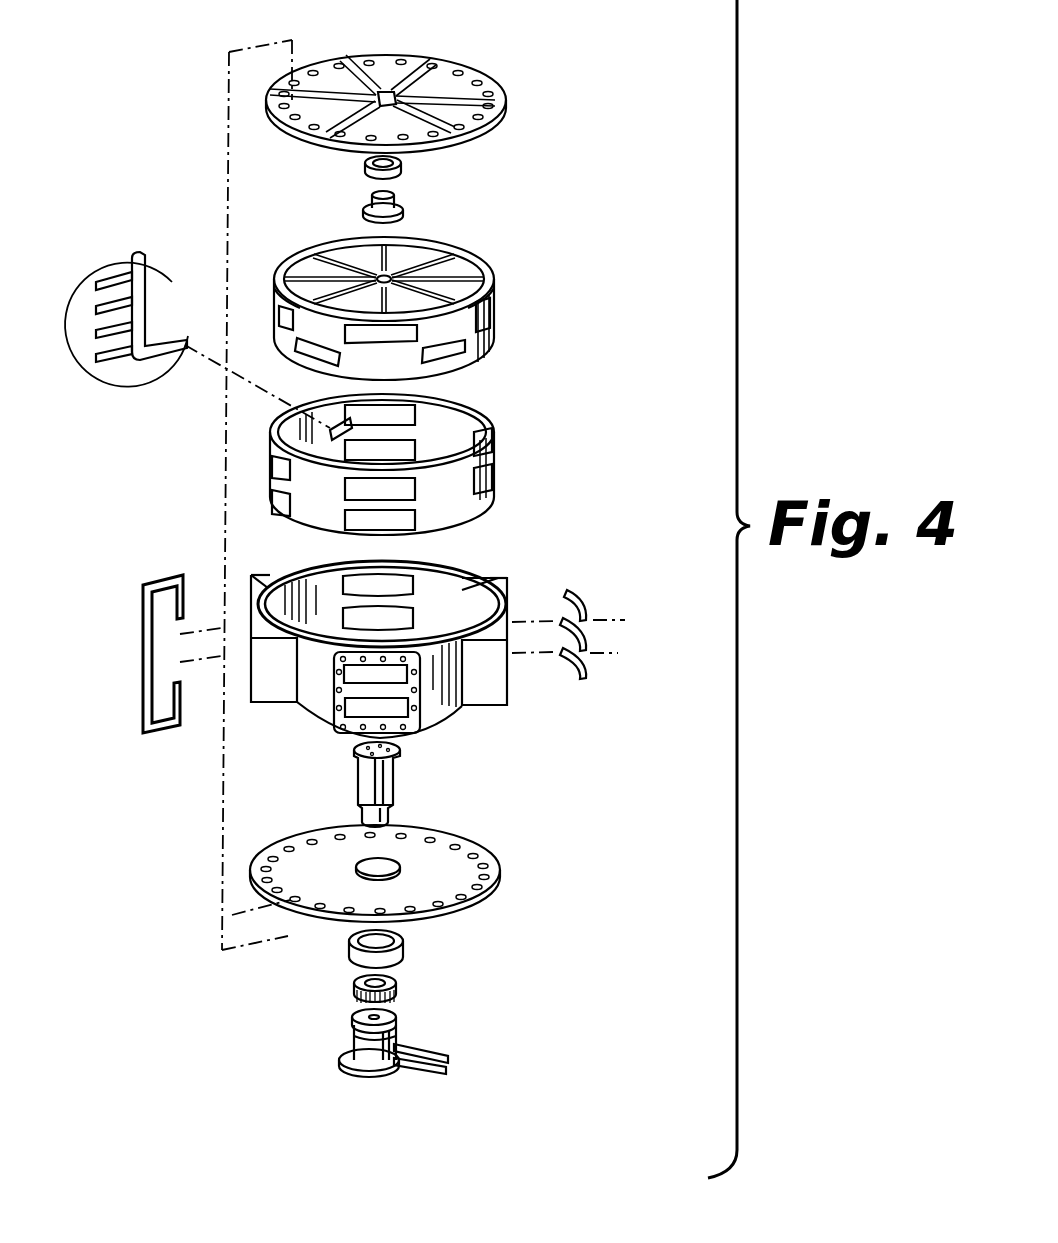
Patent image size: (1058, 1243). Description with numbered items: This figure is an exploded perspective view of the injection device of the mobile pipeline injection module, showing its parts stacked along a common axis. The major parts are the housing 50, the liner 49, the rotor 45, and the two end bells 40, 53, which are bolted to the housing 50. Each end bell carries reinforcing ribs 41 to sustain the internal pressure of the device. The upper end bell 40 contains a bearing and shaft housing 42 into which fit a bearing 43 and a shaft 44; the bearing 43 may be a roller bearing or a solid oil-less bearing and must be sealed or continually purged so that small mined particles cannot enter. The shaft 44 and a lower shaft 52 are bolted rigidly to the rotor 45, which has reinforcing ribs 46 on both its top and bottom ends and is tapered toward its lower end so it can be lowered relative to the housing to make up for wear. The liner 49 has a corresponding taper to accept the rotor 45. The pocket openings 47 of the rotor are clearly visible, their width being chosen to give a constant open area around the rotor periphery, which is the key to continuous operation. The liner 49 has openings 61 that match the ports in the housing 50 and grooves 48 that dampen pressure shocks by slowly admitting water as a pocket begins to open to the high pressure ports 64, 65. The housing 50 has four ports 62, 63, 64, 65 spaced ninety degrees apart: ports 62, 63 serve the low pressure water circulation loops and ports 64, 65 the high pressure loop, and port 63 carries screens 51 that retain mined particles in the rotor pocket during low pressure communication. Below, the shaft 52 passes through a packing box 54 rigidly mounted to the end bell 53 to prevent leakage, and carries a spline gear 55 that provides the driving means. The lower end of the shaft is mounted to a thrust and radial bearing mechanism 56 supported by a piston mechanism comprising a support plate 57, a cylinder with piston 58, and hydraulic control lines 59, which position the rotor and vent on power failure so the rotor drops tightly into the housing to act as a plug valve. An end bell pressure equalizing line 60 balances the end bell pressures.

The end bell 40 is at (498, 92).
The reinforcing ribs 41 is at (432, 78).
The bearing and shaft housing 42 is at (387, 80).
The bearing 43 is at (403, 168).
The shaft 44 is at (402, 205).
The rotor 45 is at (352, 246).
The reinforcing ribs 46 is at (328, 262).
The pocket openings 47 is at (453, 347).
The grooves 48 is at (122, 268).
The liner 49 is at (478, 520).
The housing 50 is at (452, 716).
The screens 51 is at (590, 650).
The shaft 52 is at (402, 776).
The end bell 53 is at (505, 872).
The packing box 54 is at (405, 946).
The spline gear 55 is at (394, 992).
The thrust and radial bearing mechanism 56 is at (352, 1017).
The support plate 57 is at (392, 1034).
The cylinder with piston 58 is at (350, 1046).
The hydraulic control lines 59 is at (430, 1075).
The end bell pressure equalizing line 60 is at (143, 617).
The openings 61 is at (488, 458).
The port 62 is at (262, 575).
The port 63 is at (500, 580).
The port 64 is at (410, 556).
The port 65 is at (340, 733).